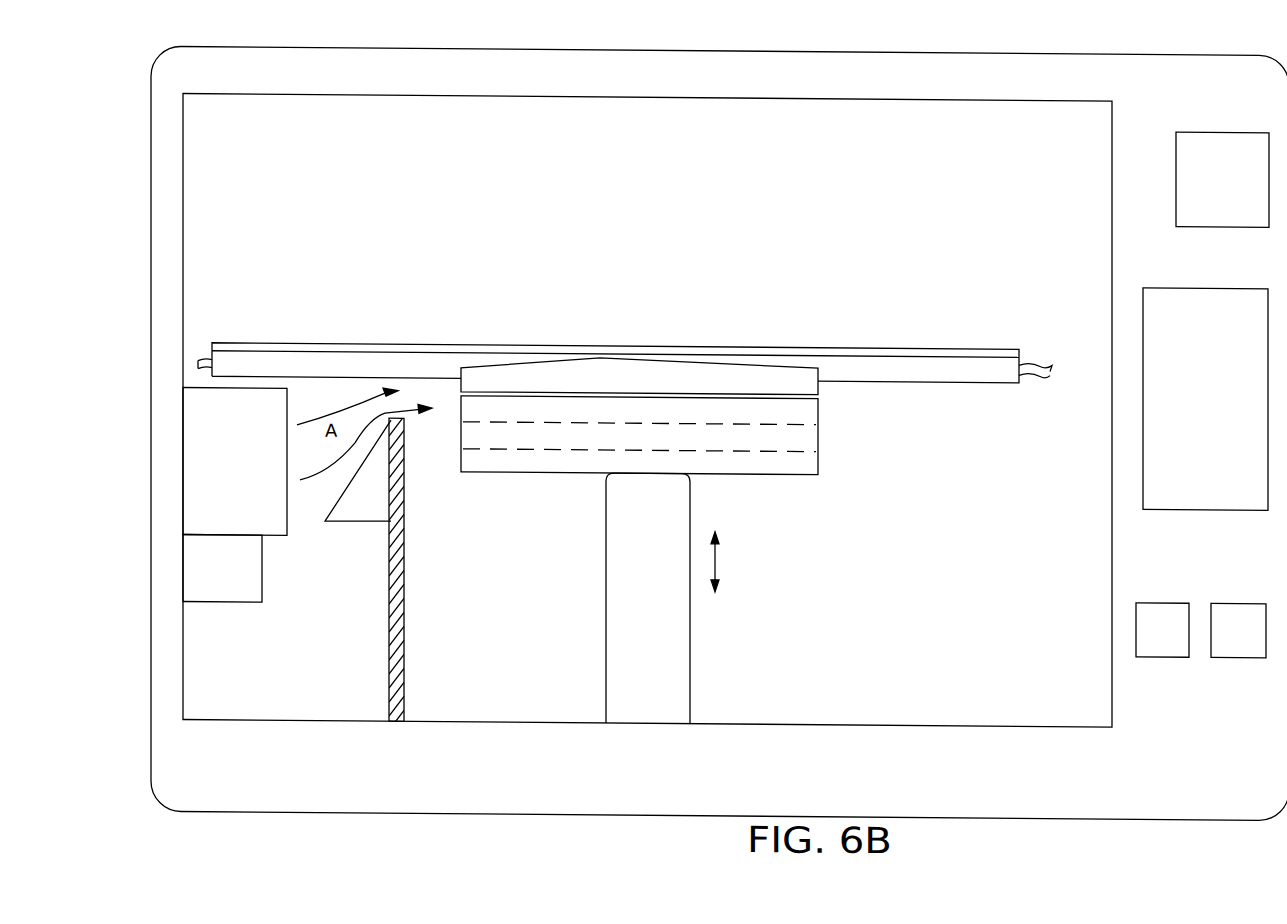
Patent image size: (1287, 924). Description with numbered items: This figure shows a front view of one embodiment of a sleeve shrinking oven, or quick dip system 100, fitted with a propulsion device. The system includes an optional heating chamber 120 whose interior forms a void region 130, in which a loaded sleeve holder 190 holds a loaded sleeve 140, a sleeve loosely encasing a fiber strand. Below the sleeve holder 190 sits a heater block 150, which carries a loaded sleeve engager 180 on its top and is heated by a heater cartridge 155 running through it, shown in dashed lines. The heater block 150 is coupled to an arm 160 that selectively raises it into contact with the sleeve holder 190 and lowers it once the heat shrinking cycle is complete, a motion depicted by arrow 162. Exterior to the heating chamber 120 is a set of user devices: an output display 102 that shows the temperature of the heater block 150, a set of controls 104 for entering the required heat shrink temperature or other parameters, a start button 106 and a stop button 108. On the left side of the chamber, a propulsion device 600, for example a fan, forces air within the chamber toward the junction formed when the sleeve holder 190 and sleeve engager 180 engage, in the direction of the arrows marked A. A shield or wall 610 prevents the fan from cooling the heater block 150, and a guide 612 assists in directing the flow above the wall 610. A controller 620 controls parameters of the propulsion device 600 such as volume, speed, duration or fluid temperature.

The quick dip system 100 is at (1123, 38).
The heating chamber 120 is at (1241, 78).
The output display 102 is at (1239, 178).
The set of controls 104 is at (1224, 401).
The start button 106 is at (1179, 630).
The stop button 108 is at (1256, 630).
The void region 130 is at (1069, 140).
The loaded sleeve 140 is at (1035, 357).
The loaded sleeve holder 190 is at (940, 341).
The loaded sleeve engager 180 is at (657, 378).
The heater block 150 is at (509, 415).
The heater cartridge 155 is at (835, 440).
The arm 160 is at (667, 558).
The arrow 162 is at (716, 562).
The propulsion device 600 is at (235, 493).
The controller 620 is at (232, 580).
The guide 612 is at (381, 513).
The shield or wall 610 is at (404, 647).